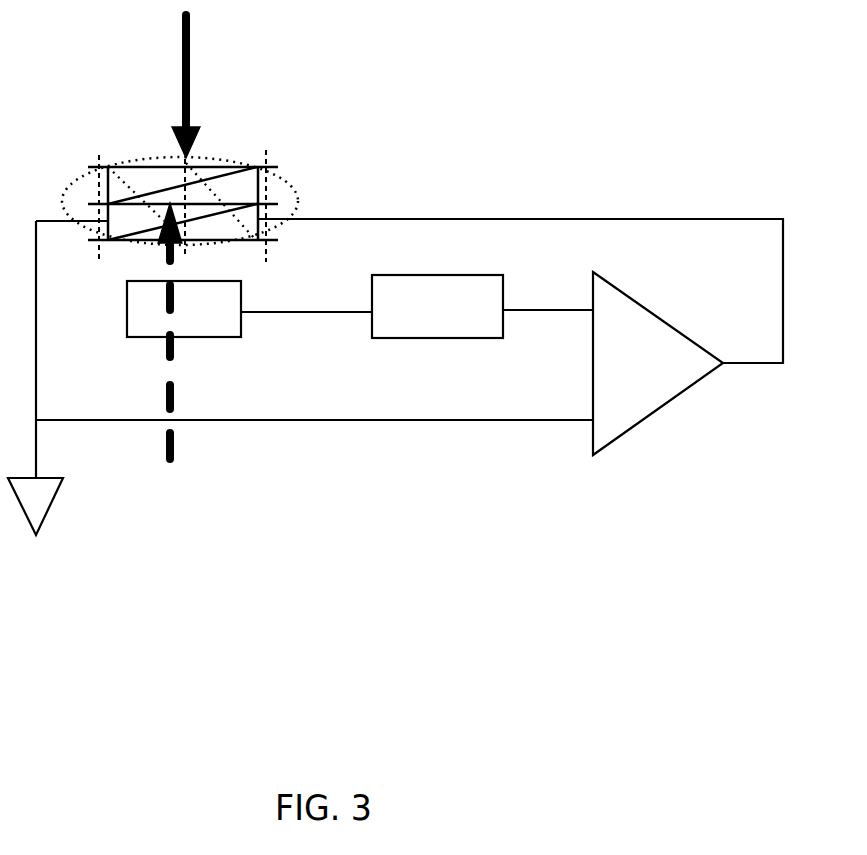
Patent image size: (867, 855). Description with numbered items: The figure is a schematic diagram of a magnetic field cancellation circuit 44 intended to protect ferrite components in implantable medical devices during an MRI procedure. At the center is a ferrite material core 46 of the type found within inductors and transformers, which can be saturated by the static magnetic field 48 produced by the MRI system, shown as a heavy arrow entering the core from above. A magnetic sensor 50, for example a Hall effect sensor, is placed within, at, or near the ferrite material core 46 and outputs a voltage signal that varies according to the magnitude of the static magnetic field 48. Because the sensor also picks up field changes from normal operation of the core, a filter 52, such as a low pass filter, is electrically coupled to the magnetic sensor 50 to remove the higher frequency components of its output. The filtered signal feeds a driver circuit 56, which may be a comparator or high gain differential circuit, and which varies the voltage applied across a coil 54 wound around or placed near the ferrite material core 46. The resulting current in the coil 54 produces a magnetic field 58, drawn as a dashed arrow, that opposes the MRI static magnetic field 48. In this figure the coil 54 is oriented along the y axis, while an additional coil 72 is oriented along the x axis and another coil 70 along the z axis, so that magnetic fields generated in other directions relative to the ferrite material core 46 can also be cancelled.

The magnetic field cancellation circuit 44 is at (635, 103).
The ferrite material core 46 is at (243, 192).
The static magnetic field 48 is at (189, 72).
The magnetic sensor 50 is at (184, 309).
The filter 52 is at (437, 306).
The coil 54 is at (165, 187).
The driver circuit 56 is at (658, 363).
The opposing magnetic field 58 is at (175, 353).
The coil 70 is at (297, 203).
The coil 72 is at (240, 233).